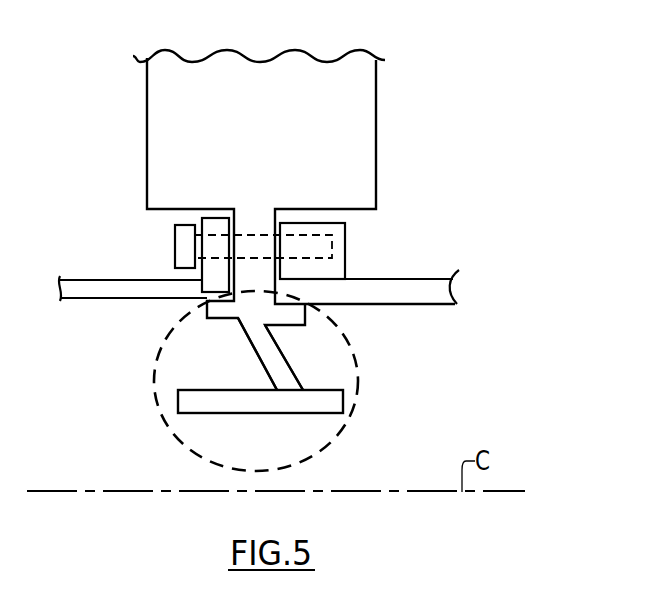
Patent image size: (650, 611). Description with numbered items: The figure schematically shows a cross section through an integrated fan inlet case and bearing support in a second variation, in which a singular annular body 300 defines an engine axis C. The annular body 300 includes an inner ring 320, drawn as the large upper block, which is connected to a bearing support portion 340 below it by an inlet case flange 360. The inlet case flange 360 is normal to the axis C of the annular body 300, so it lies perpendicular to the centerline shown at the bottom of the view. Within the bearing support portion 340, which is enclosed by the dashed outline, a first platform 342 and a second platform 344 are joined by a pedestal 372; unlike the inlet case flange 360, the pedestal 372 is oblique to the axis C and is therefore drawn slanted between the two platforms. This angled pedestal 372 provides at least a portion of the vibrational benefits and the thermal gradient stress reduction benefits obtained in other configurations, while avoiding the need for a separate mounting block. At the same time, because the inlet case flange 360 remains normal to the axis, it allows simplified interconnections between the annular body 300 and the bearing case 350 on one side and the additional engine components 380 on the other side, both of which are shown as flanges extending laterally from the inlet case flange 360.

The annular body 300 is at (424, 141).
The inner ring 320 is at (352, 190).
The bearing support portion 340 is at (352, 343).
The first platform 342 is at (293, 327).
The second platform 344 is at (328, 402).
The bearing case 350 is at (128, 284).
The inlet case flange 360 is at (258, 277).
The pedestal 372 is at (261, 349).
The additional engine components 380 is at (432, 289).